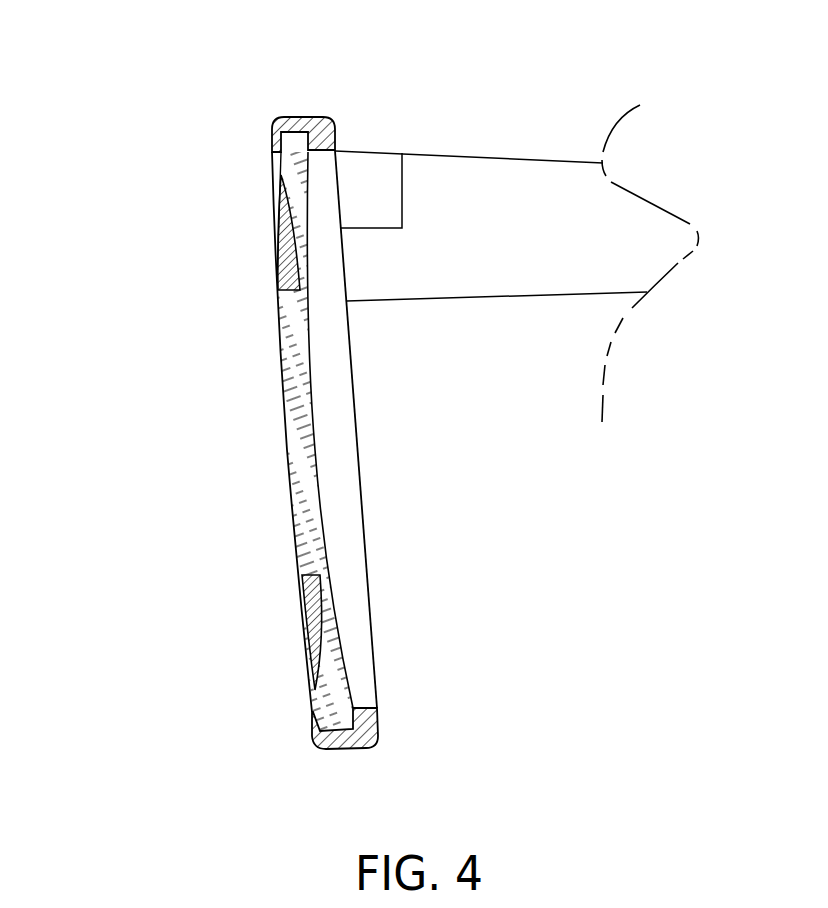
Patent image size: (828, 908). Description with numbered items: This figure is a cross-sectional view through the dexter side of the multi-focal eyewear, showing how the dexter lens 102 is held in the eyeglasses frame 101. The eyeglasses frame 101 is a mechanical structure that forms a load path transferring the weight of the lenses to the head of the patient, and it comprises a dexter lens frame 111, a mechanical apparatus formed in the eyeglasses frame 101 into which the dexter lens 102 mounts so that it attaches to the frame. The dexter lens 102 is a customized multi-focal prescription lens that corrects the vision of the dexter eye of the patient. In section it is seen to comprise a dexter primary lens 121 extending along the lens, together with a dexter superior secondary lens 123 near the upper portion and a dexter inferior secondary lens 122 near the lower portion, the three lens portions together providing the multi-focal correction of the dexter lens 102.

The eyeglasses frame 101 is at (473, 163).
The dexter lens 102 is at (210, 379).
The dexter lens frame 111 is at (302, 127).
The dexter primary lens 121 is at (287, 452).
The dexter inferior secondary lens 122 is at (310, 625).
The dexter superior secondary lens 123 is at (278, 254).